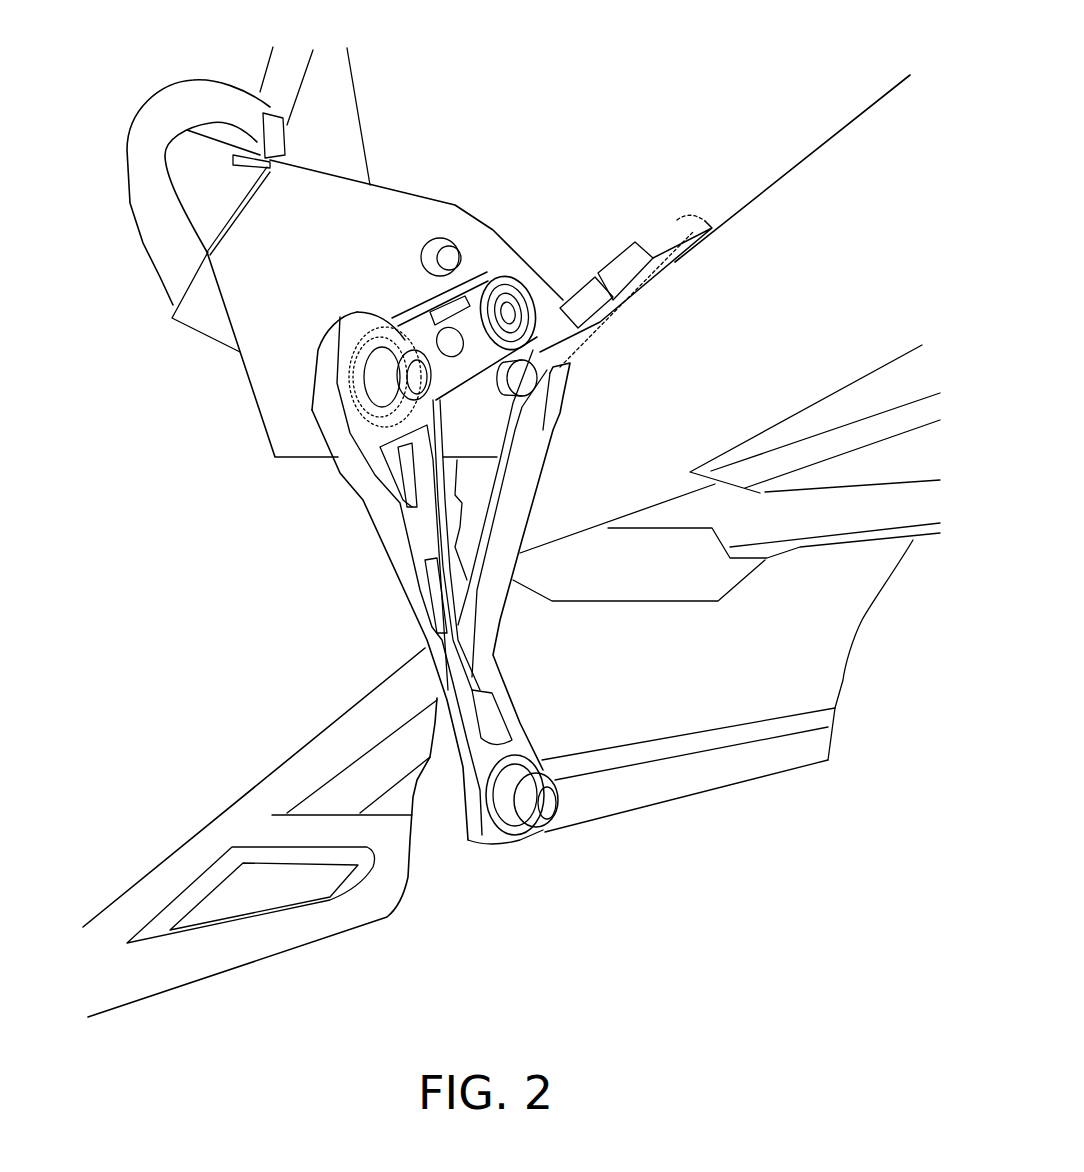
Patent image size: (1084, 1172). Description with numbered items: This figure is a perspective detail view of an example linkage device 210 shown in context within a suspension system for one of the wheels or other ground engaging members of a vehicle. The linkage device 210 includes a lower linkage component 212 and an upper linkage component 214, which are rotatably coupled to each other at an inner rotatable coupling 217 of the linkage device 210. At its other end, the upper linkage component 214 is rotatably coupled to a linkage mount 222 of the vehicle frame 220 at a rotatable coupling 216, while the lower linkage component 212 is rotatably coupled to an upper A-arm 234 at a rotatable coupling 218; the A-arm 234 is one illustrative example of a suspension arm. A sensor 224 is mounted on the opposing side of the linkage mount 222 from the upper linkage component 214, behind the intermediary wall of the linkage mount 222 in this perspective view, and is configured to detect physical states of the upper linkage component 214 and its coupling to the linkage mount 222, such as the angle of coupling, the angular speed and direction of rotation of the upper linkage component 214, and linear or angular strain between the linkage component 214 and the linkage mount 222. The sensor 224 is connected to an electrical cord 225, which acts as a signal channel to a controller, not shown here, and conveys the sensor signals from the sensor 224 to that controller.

The linkage device 210 is at (340, 583).
The lower linkage component 212 is at (375, 511).
The upper linkage component 214 is at (412, 300).
The rotatable coupling 216 is at (529, 268).
The inner rotatable coupling 217 is at (338, 323).
The rotatable coupling 218 is at (530, 843).
The vehicle frame 220 is at (749, 180).
The linkage mount 222 is at (433, 186).
The sensor 224 is at (196, 334).
The electrical cord 225 is at (132, 203).
The upper A-arm 234 is at (447, 893).